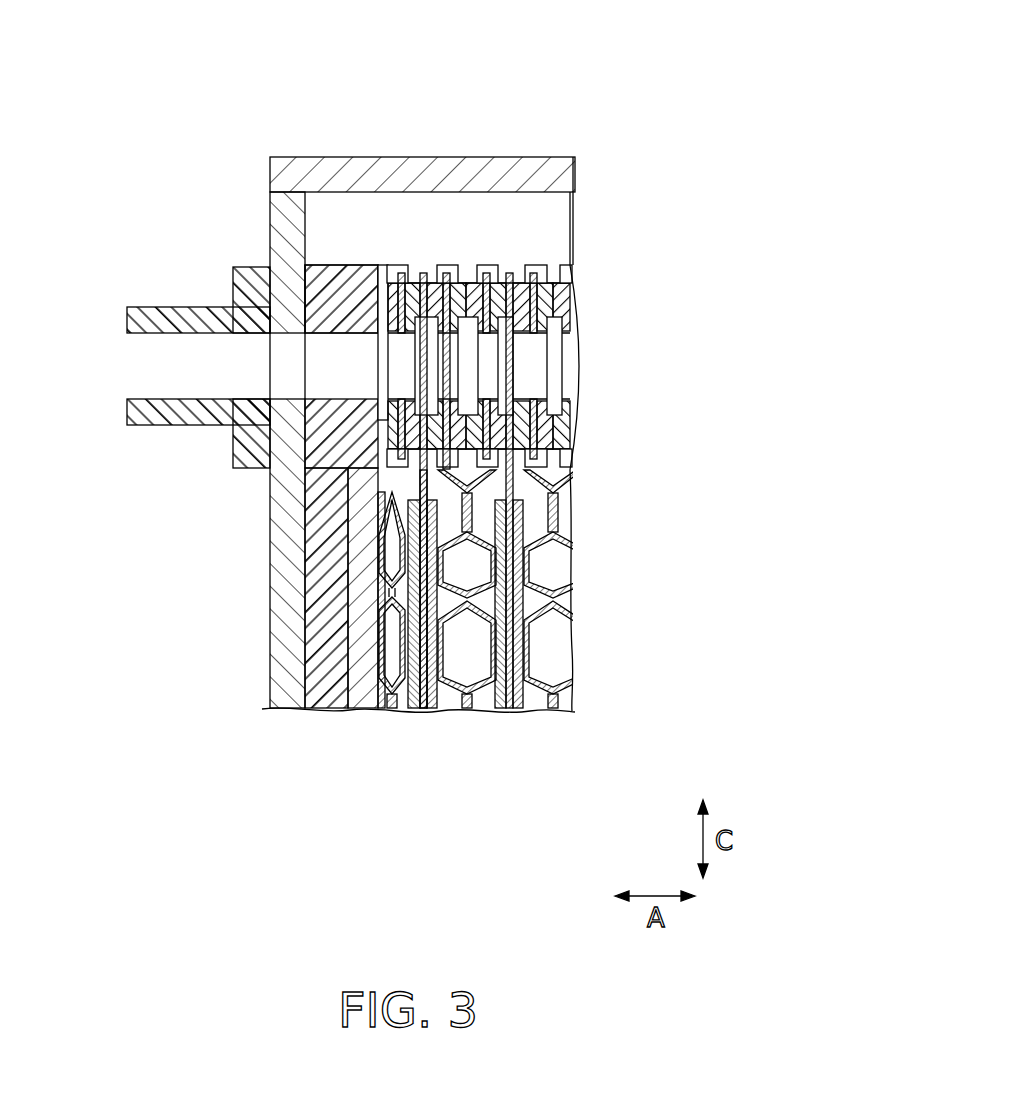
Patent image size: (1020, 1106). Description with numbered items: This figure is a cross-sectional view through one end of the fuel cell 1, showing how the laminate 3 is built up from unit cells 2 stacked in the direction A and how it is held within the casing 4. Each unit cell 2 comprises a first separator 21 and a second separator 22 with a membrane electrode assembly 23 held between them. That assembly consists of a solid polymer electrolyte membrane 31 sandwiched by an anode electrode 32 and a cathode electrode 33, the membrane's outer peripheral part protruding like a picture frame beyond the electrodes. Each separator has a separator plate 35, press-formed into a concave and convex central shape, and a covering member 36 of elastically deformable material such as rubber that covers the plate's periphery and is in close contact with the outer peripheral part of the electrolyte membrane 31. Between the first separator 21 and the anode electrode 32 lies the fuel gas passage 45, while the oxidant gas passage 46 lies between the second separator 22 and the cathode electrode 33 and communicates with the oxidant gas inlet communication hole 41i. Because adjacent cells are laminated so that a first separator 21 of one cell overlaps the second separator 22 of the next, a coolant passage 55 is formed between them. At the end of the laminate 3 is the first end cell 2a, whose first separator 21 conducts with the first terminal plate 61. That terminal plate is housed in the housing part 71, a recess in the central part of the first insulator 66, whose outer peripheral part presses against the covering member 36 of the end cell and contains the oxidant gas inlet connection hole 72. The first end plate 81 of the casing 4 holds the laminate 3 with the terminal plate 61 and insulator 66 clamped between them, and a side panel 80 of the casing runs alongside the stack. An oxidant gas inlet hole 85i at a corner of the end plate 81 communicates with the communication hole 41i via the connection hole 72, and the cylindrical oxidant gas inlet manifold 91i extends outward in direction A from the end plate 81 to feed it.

The rotary electric machine 1 is at (205, 182).
The unit cell 2 is at (511, 379).
The first end cell 2a is at (511, 358).
The laminate 3 is at (578, 266).
The casing 4 is at (570, 152).
The first separator 21 is at (409, 256).
The second separator 22 is at (452, 253).
The membrane electrode assembly 23 is at (425, 262).
The solid polymer electrolyte membrane 31 is at (422, 710).
The anode electrode 32 is at (413, 710).
The cathode electrode 33 is at (432, 710).
The separator plate 35 is at (386, 710).
The covering member 36 is at (398, 266).
The oxidant gas inlet communication hole 41i is at (382, 336).
The fuel gas passage 45 is at (393, 622).
The oxidant gas passage 46 is at (450, 612).
The coolant passage 55 is at (470, 660).
The first terminal plate 61 is at (300, 718).
The first insulator 66 is at (337, 266).
The housing part 71 is at (358, 472).
The oxidant gas inlet connection hole 72 is at (332, 336).
The side panel 80 is at (317, 190).
The first end plate 81 is at (272, 672).
The oxidant gas inlet hole 85i is at (270, 336).
The oxidant gas inlet manifold 91i is at (150, 306).